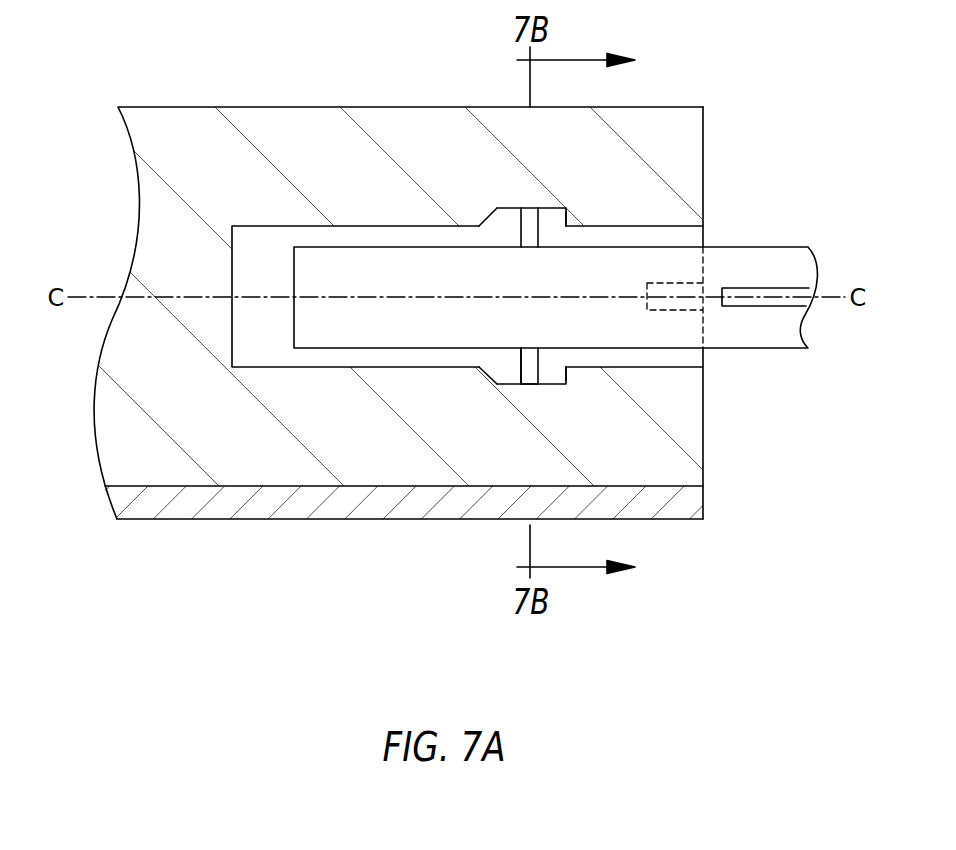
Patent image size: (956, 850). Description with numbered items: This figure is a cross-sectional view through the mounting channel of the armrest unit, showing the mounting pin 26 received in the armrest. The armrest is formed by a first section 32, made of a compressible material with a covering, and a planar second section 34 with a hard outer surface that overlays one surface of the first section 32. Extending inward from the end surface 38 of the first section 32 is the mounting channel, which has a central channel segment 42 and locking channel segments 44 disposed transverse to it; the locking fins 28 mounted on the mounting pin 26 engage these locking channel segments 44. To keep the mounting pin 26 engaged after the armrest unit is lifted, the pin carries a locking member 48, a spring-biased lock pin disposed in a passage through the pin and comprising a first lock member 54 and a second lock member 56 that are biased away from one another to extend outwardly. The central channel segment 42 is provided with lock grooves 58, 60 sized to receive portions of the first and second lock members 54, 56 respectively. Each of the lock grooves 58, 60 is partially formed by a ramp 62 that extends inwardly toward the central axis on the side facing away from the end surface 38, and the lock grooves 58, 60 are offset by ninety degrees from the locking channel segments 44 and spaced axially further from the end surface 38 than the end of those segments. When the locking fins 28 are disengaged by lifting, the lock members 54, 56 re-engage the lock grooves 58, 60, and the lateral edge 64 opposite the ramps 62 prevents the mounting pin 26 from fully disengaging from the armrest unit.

The mounting pin 26 is at (723, 258).
The locking fins 28 is at (770, 288).
The first section 32 is at (287, 120).
The second section 34 is at (247, 519).
The end surface 38 is at (703, 158).
The central channel segment 42 is at (263, 250).
The locking channel segments 44 is at (675, 310).
The locking member 48 is at (504, 362).
The first lock member 54 is at (532, 230).
The second lock member 56 is at (532, 368).
The lock groove 58 is at (510, 374).
The lock groove 60 is at (510, 217).
The ramp 62 is at (487, 217).
The lateral edge 64 is at (564, 214).